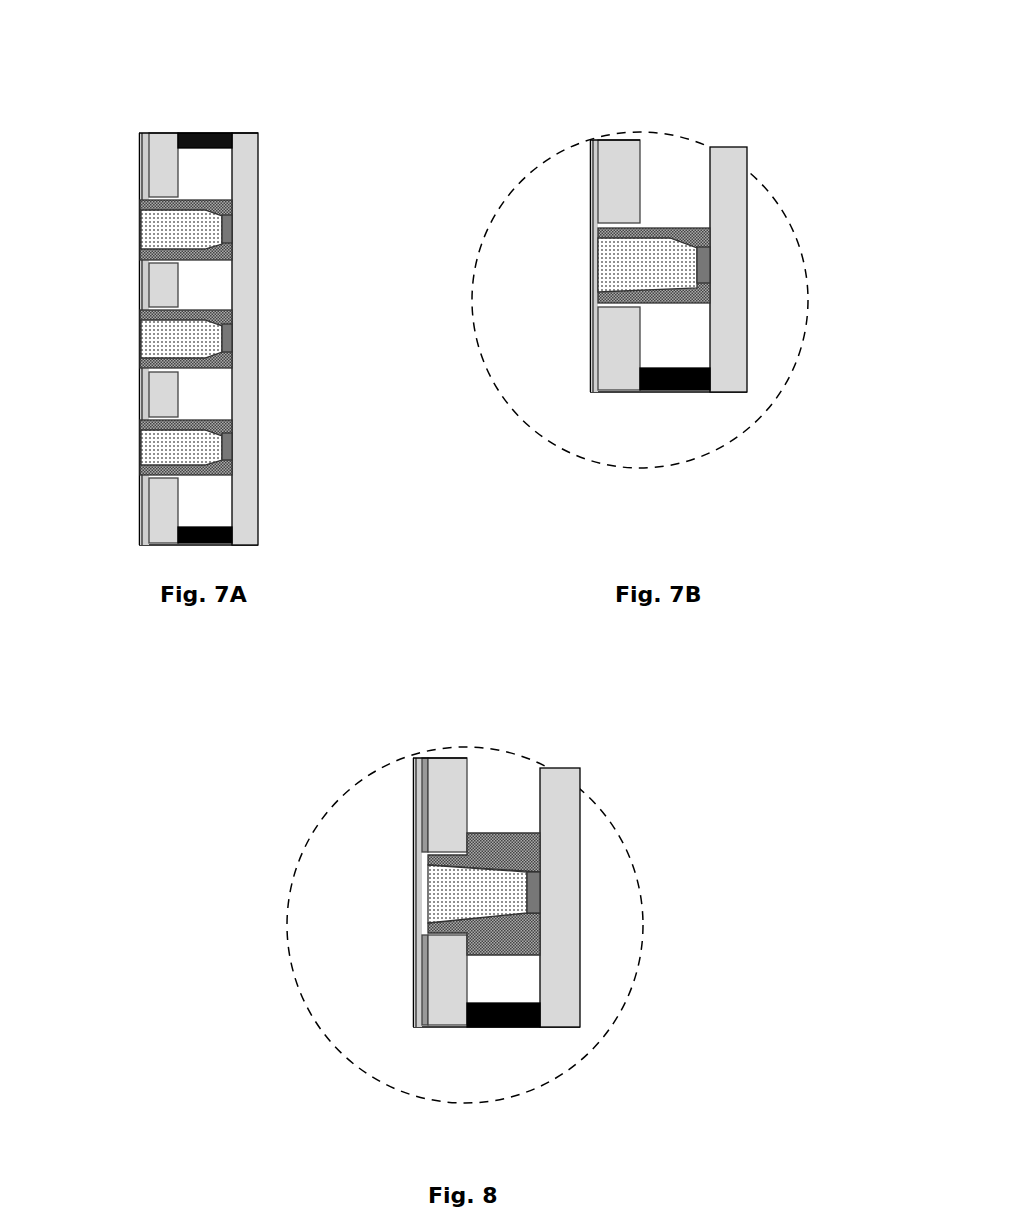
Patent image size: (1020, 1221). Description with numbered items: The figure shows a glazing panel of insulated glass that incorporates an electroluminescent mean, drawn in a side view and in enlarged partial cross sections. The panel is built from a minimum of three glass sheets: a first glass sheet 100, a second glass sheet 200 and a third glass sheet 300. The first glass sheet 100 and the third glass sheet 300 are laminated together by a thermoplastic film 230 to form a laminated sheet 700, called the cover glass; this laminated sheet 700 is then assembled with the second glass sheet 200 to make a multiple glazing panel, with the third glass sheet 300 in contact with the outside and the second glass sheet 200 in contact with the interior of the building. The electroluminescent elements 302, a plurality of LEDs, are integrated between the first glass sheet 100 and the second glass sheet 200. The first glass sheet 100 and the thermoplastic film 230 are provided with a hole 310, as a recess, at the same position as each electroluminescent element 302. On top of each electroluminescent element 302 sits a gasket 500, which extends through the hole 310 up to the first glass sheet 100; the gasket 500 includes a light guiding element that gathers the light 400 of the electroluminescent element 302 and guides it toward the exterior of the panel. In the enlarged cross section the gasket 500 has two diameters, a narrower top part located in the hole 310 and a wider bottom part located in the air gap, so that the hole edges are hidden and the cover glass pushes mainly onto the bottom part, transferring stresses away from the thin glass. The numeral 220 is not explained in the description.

In FIG. 7A, the first glass sheet 100 is at (166, 126).
In FIG. 7B, the first glass sheet 100 is at (619, 142).
In FIG. 8, the first glass sheet 100 is at (448, 771).
In FIG. 7A, the second glass sheet 200 is at (247, 127).
In FIG. 7B, the second glass sheet 200 is at (729, 151).
In FIG. 8, the second glass sheet 200 is at (559, 776).
In FIG. 7A, the contact pad 220 is at (206, 153).
In FIG. 7B, the contact pad 220 is at (675, 379).
In FIG. 8, the contact pad 220 is at (503, 1015).
In FIG. 7A, the thermoplastic film 230 is at (136, 367).
In FIG. 7B, the thermoplastic film 230 is at (590, 190).
In FIG. 8, the thermoplastic film 230 is at (496, 892).
In FIG. 7A, the third glass sheet 300 is at (148, 126).
In FIG. 7B, the third glass sheet 300 is at (598, 137).
In FIG. 8, the third glass sheet 300 is at (419, 765).
In FIG. 7A, the electroluminescent elements 302 is at (229, 227).
In FIG. 7B, the electroluminescent elements 302 is at (712, 255).
In FIG. 8, the electroluminescent elements 302 is at (542, 882).
In FIG. 7A, the hole 310 is at (162, 374).
In FIG. 7A, the light 400 is at (222, 432).
In FIG. 7B, the light 400 is at (700, 250).
In FIG. 8, the light 400 is at (530, 880).
In FIG. 7A, the gasket 500 is at (197, 301).
In FIG. 7B, the gasket 500 is at (669, 223).
In FIG. 8, the gasket 500 is at (498, 847).
In FIG. 7A, the laminated sheet 700 is at (175, 130).
In FIG. 7B, the laminated sheet 700 is at (641, 150).
In FIG. 8, the laminated sheet 700 is at (477, 777).